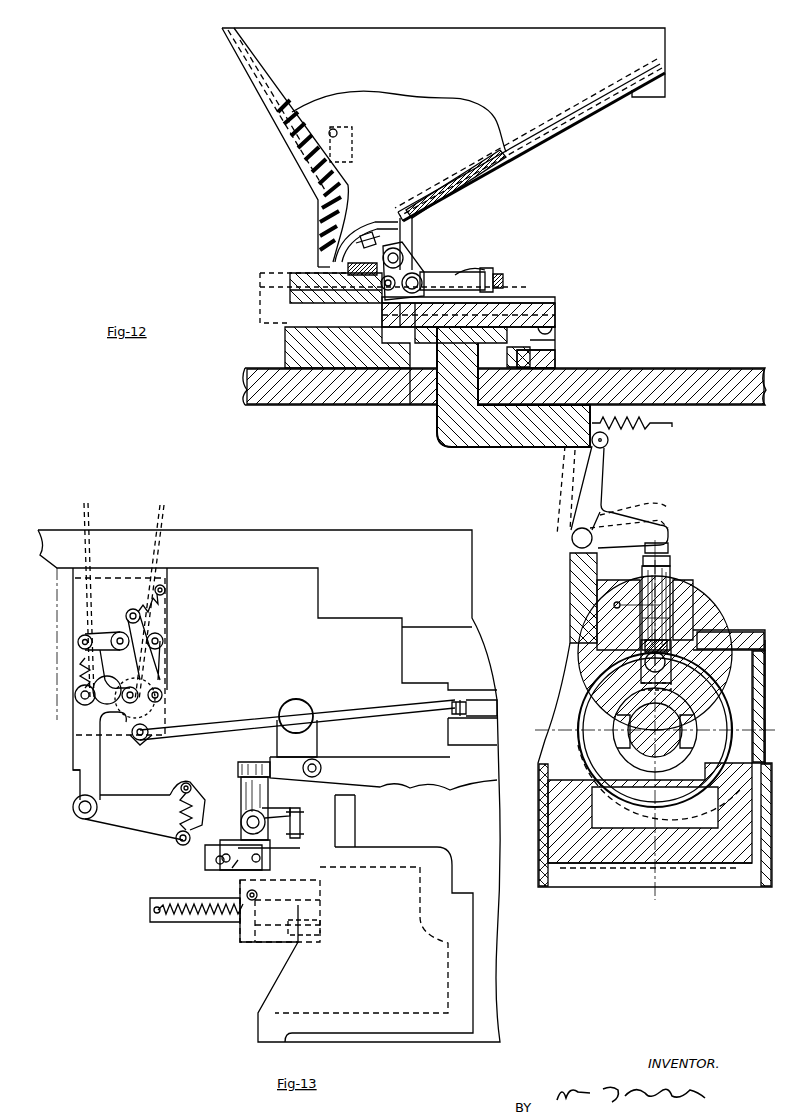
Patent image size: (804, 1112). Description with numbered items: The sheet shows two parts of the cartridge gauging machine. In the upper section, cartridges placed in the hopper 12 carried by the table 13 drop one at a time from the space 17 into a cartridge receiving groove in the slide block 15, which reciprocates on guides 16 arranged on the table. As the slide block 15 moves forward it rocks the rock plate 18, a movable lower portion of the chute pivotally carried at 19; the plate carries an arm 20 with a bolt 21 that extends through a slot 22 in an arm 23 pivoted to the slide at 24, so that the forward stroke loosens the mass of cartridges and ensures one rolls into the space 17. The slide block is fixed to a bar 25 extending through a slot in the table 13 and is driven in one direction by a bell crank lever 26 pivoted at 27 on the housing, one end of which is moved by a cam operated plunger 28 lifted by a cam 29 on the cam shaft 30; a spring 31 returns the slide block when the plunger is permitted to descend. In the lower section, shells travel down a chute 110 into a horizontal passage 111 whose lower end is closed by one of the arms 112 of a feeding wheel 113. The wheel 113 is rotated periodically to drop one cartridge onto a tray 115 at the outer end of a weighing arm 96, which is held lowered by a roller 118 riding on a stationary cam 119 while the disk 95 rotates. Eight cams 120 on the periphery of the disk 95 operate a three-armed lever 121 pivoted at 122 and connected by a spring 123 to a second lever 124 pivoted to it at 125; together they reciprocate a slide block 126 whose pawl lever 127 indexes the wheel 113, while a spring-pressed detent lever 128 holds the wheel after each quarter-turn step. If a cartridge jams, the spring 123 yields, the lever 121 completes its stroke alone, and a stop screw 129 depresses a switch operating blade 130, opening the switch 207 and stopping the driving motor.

In FIG. 12, the hopper 12 is at (595, 110).
In FIG. 12, the table 13 is at (594, 378).
In FIG. 12, the slide block 15 is at (300, 290).
In FIG. 12, the guides 16 is at (557, 330).
In FIG. 12, the space 17 is at (330, 252).
In FIG. 12, the rock plate 18 is at (378, 228).
In FIG. 12, the pivot 19 is at (420, 250).
In FIG. 12, the arm 20 is at (420, 278).
In FIG. 12, the bolt 21 is at (470, 272).
In FIG. 12, the slot 22 is at (520, 295).
In FIG. 12, the arm 23 is at (470, 290).
In FIG. 12, the pivot 24 is at (290, 305).
In FIG. 12, the bar 25 is at (436, 430).
In FIG. 12, the bell crank lever 26 is at (607, 470).
In FIG. 12, the pivot 27 is at (588, 533).
In FIG. 12, the cam operated plunger 28 is at (668, 570).
In FIG. 12, the cam 29 is at (700, 723).
In FIG. 12, the cam shaft 30 is at (645, 745).
In FIG. 12, the spring 31 is at (632, 425).
In FIG. 13, the disk 95 is at (378, 780).
In FIG. 13, the weighing arm 96 is at (238, 700).
In FIG. 13, the chute 110 is at (166, 520).
In FIG. 13, the horizontal passage 111 is at (108, 700).
In FIG. 13, the arms 112 is at (162, 695).
In FIG. 13, the feeding wheel 113 is at (140, 690).
In FIG. 13, the tray 115 is at (148, 740).
In FIG. 13, the roller 118 is at (452, 706).
In FIG. 13, the cam 119 is at (452, 733).
In FIG. 13, the cams 120 is at (320, 762).
In FIG. 13, the three-armed lever 121 is at (240, 806).
In FIG. 13, the pivot 122 is at (250, 905).
In FIG. 13, the spring 123 is at (178, 812).
In FIG. 13, the second lever 124 is at (120, 820).
In FIG. 13, the pivot 125 is at (258, 826).
In FIG. 13, the slide block 126 is at (90, 740).
In FIG. 13, the pawl lever 127 is at (110, 665).
In FIG. 13, the spring-pressed detent lever 128 is at (160, 660).
In FIG. 13, the stop screw 129 is at (295, 832).
In FIG. 13, the switch operating blade 130 is at (268, 826).
In FIG. 13, the switch 207 is at (212, 875).